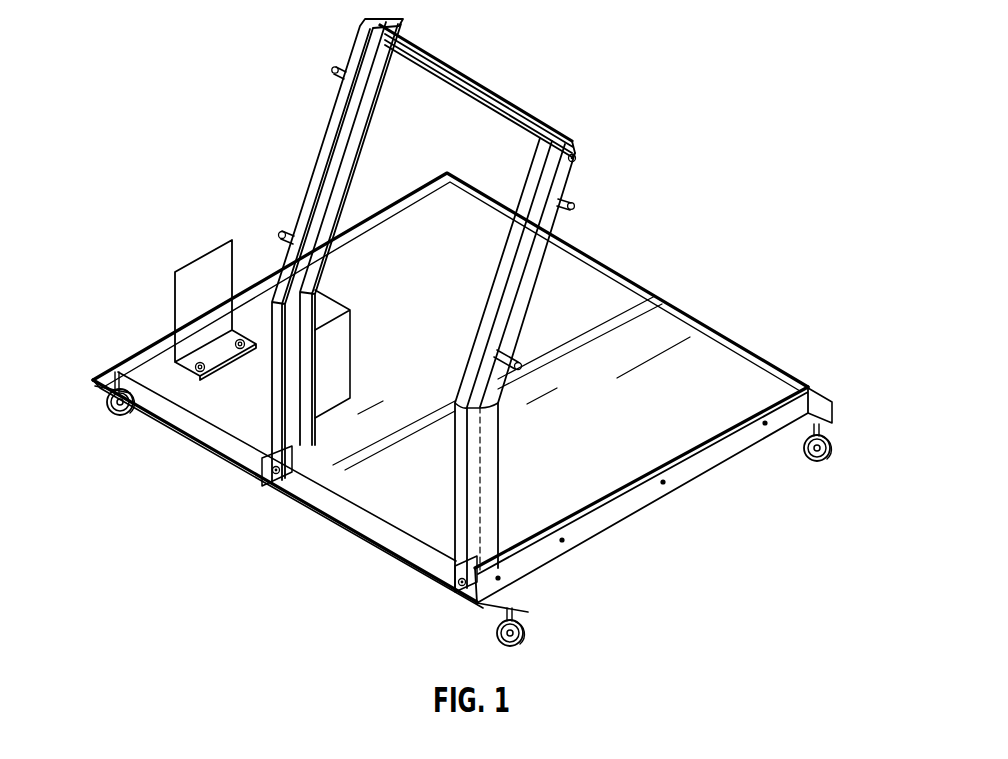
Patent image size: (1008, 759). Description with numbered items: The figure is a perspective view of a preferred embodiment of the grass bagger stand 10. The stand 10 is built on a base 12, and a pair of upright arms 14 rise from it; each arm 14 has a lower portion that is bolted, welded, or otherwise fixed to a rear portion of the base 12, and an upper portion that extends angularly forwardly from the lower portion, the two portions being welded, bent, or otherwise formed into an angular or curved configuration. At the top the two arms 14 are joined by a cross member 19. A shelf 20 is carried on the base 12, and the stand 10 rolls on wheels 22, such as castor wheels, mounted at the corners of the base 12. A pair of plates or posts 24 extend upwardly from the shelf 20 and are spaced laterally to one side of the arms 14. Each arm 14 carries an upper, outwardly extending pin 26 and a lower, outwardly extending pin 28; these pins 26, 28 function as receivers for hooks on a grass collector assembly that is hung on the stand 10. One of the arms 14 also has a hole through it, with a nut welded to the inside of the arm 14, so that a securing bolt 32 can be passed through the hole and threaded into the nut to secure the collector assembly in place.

The grass bagger stand 10 is at (462, 328).
The base 12 is at (300, 504).
The upright arms 14 is at (332, 118).
The crossbar 19 is at (460, 73).
The shelf 20 is at (733, 386).
The wheels 22 is at (125, 418).
The plates or posts 24 is at (197, 258).
The upper pin 26 is at (334, 70).
The lower pin 28 is at (280, 235).
The securing bolt 32 is at (576, 158).